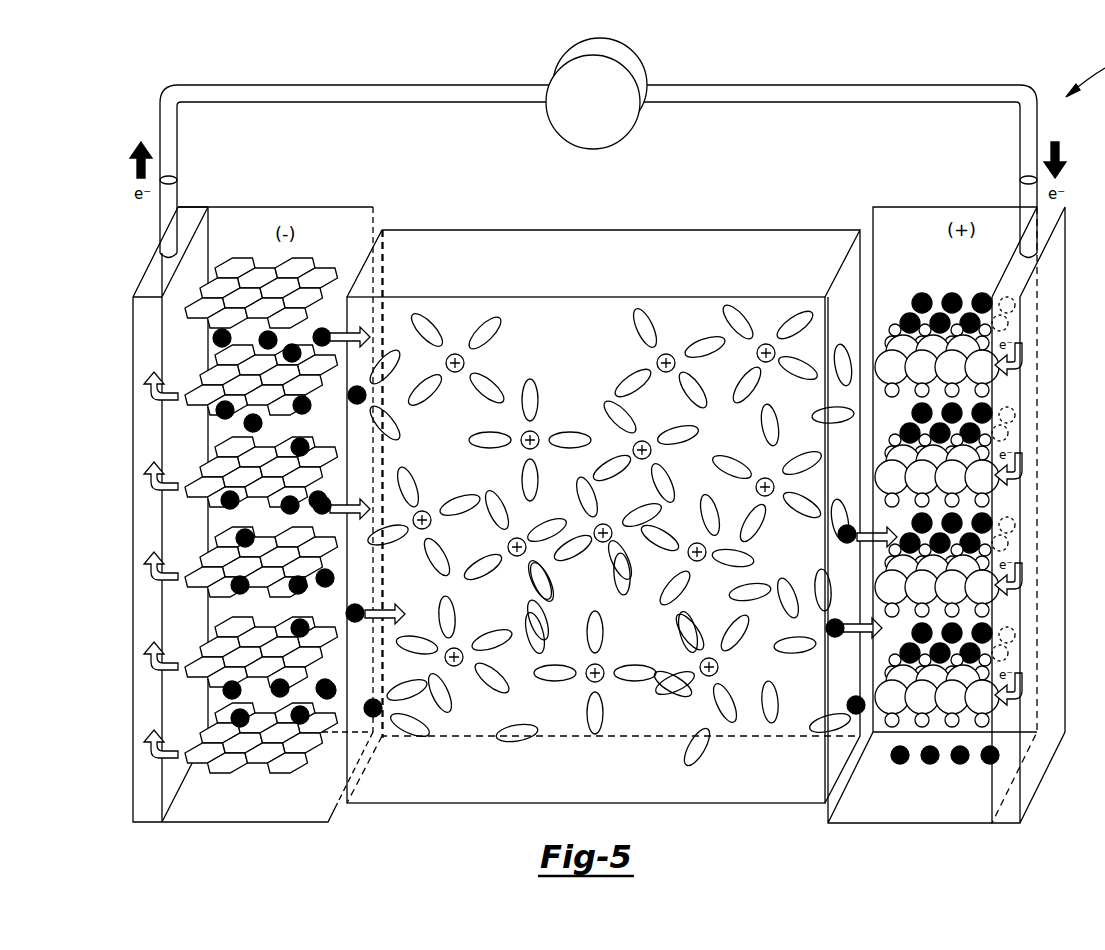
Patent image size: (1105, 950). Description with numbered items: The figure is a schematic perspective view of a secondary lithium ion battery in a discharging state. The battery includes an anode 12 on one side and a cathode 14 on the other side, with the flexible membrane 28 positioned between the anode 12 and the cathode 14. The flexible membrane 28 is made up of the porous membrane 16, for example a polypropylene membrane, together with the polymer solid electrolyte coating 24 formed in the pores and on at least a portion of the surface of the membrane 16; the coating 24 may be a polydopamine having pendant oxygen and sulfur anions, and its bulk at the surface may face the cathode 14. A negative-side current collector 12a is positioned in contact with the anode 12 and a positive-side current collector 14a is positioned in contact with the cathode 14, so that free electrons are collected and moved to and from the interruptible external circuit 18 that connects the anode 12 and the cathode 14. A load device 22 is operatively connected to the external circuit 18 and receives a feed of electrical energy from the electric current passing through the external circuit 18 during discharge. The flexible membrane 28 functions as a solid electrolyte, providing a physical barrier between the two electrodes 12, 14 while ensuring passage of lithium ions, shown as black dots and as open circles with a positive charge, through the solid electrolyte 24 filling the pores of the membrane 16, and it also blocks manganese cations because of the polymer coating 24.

The anode 12 is at (235, 780).
The negative-side current collector 12a is at (148, 796).
The cathode 14 is at (896, 768).
The positive-side current collector 14a is at (1005, 815).
The porous membrane 16 is at (750, 803).
The external circuit 18 is at (430, 85).
The load device 22 is at (641, 62).
The polymer solid electrolyte coating 24 is at (609, 535).
The flexible membrane 28 is at (612, 230).